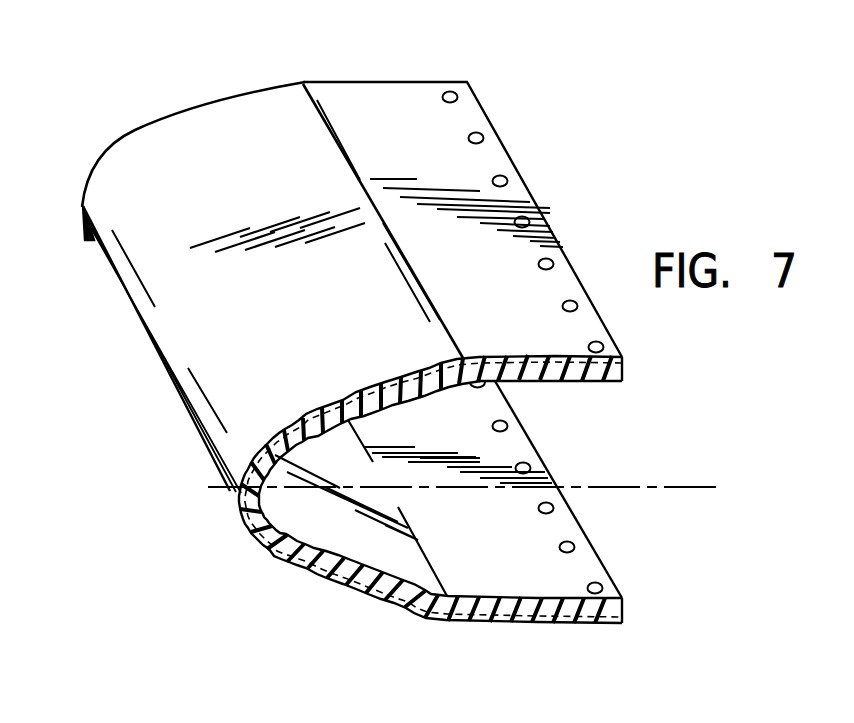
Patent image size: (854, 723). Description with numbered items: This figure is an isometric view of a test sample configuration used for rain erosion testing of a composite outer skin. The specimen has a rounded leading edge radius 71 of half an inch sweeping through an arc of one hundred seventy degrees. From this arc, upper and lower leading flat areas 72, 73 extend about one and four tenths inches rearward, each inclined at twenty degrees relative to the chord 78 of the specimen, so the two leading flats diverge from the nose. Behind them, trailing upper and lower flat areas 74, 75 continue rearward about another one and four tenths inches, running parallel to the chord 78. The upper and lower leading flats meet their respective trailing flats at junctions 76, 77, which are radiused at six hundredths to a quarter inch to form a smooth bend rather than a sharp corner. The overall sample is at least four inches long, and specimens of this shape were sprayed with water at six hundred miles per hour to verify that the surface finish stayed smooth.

The leading edge radius 71 is at (85, 176).
The upper leading flat area 72 is at (225, 124).
The lower leading flat area 73 is at (340, 582).
The trailing upper flat area 74 is at (383, 88).
The trailing lower flat area 75 is at (560, 623).
The junction 76 is at (308, 81).
The junction 77 is at (443, 620).
The chord 78 is at (677, 487).